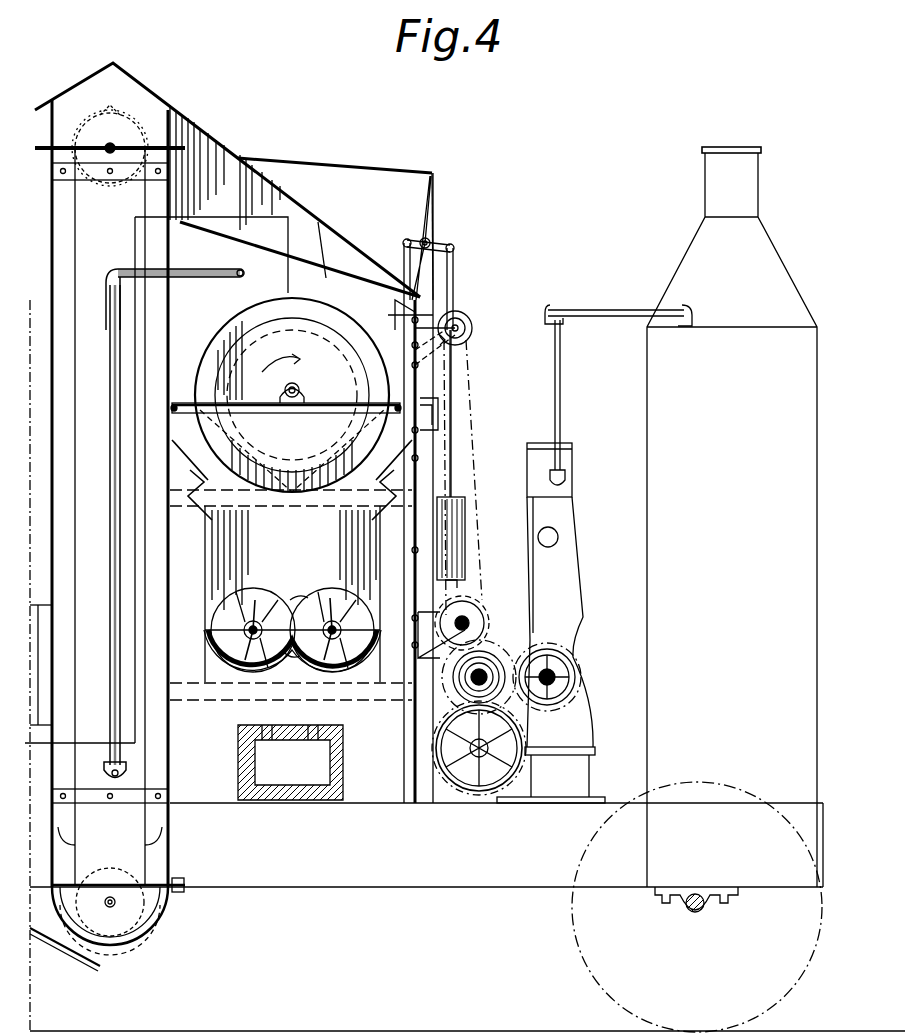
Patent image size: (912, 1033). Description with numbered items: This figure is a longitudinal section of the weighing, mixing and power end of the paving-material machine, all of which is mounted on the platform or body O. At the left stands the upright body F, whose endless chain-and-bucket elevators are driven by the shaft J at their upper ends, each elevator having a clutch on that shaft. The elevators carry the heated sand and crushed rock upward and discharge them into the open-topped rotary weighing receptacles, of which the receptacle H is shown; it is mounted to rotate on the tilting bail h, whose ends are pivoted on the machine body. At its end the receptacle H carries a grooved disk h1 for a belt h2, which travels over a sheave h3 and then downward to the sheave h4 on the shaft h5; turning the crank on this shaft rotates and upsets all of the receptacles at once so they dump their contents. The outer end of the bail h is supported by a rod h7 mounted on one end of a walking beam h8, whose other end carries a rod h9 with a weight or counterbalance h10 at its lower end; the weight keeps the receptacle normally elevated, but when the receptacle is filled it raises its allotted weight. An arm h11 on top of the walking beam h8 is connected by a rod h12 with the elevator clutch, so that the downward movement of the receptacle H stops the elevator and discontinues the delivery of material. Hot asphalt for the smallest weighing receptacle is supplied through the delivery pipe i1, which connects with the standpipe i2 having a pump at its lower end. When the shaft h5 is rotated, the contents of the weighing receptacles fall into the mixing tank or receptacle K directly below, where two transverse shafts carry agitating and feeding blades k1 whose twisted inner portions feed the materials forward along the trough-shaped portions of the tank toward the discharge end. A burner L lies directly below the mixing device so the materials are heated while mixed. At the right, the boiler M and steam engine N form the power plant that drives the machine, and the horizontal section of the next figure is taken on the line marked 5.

The upright body F is at (220, 509).
The shaft J is at (112, 148).
The delivery pipe i1 is at (190, 270).
The standpipe i2 is at (104, 531).
The receptacle H is at (243, 326).
The grooved disk h1 is at (226, 346).
The bail h is at (320, 402).
The rod h12 is at (340, 162).
The arm h11 is at (432, 190).
The rod h7 is at (404, 258).
The walking beam h8 is at (433, 242).
The rod h9 is at (455, 266).
The sheave h3 is at (466, 318).
The belt h2 is at (470, 365).
The weight or counterbalance h10 is at (458, 500).
The sheave h4 is at (466, 602).
The shaft h5 is at (466, 623).
The steam engine N is at (566, 524).
The boiler M is at (732, 517).
The mixing tank or receptacle K is at (232, 562).
The agitating and feeding blades k1 is at (332, 642).
The burner L is at (305, 772).
The platform or body O is at (497, 872).
The section line 5 is at (400, 602).